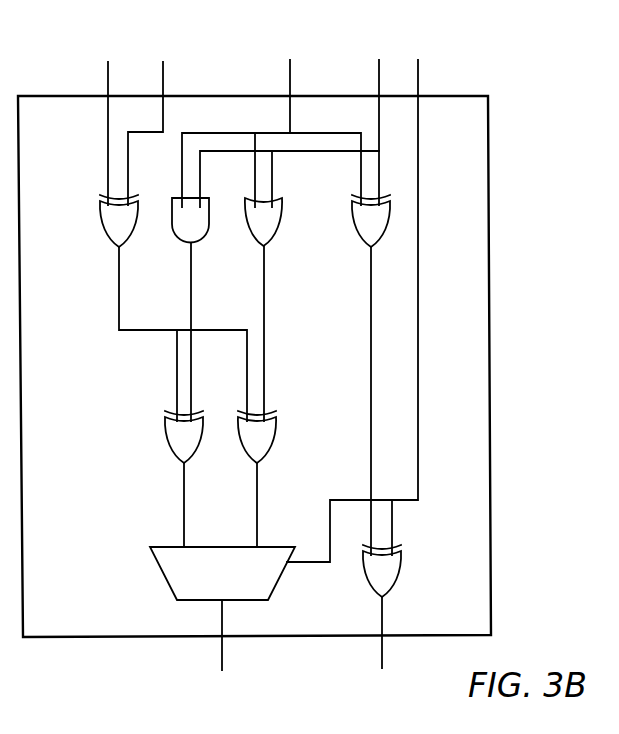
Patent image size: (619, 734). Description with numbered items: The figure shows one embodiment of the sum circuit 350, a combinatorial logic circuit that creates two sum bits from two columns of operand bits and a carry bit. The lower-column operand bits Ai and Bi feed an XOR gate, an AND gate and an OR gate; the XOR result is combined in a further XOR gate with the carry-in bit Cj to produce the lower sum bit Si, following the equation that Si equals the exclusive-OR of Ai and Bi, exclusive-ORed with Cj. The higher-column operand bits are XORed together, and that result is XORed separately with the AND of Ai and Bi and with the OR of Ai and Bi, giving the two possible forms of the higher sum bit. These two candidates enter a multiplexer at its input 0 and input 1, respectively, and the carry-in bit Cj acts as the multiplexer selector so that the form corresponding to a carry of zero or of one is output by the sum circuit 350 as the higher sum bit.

The sum circuit 350 is at (254, 369).
The input bit Bi is at (271, 118).
The input bit Ai is at (294, 118).
The carry-in bit Cj is at (356, 296).
The multiplexer input for Cj equal to zero 0 is at (186, 520).
The multiplexer input for Cj equal to one 1 is at (258, 520).
The sum bit Si is at (384, 652).